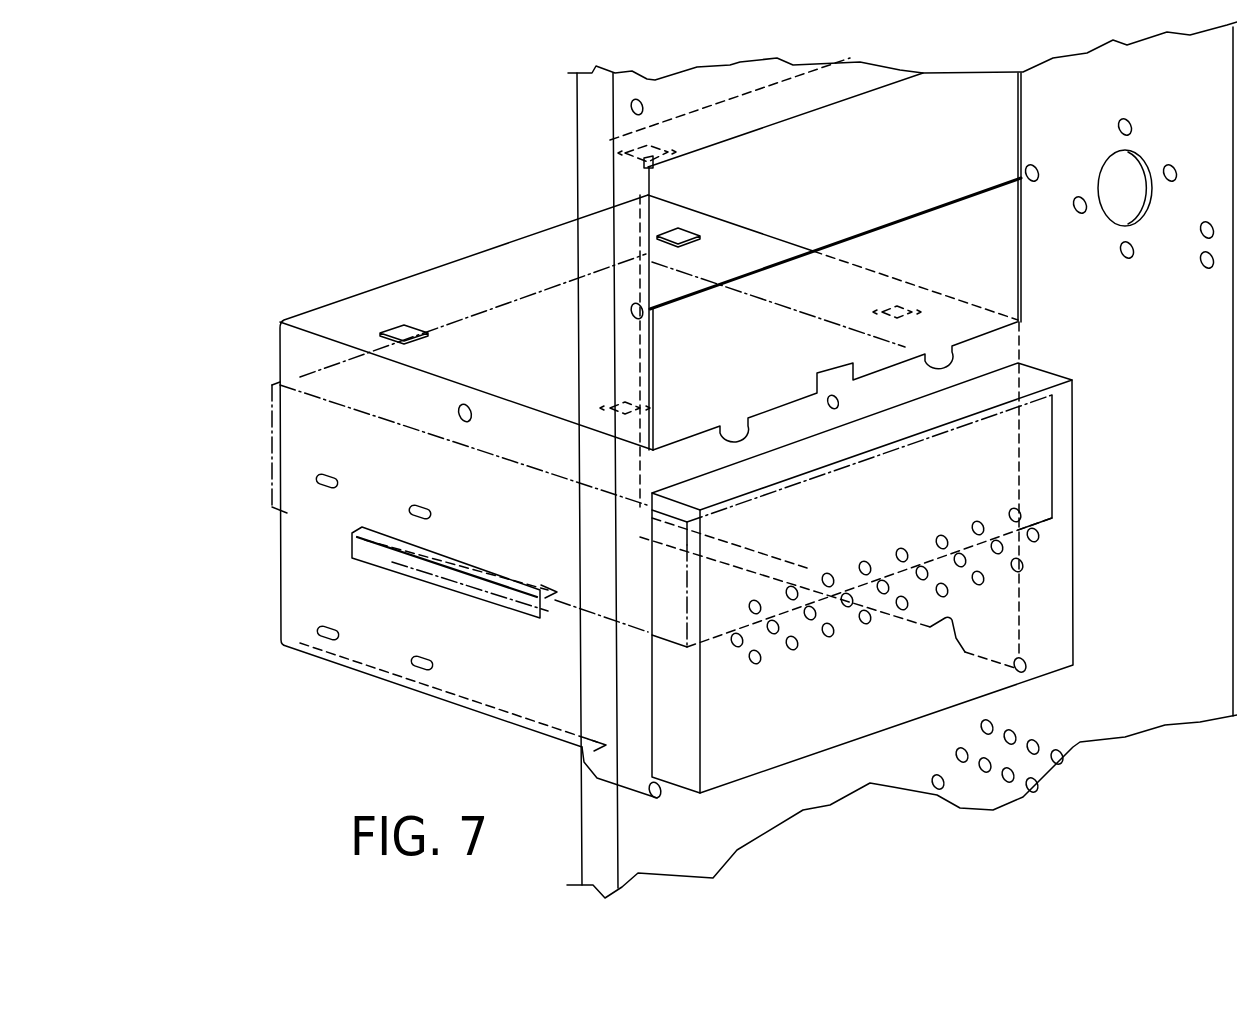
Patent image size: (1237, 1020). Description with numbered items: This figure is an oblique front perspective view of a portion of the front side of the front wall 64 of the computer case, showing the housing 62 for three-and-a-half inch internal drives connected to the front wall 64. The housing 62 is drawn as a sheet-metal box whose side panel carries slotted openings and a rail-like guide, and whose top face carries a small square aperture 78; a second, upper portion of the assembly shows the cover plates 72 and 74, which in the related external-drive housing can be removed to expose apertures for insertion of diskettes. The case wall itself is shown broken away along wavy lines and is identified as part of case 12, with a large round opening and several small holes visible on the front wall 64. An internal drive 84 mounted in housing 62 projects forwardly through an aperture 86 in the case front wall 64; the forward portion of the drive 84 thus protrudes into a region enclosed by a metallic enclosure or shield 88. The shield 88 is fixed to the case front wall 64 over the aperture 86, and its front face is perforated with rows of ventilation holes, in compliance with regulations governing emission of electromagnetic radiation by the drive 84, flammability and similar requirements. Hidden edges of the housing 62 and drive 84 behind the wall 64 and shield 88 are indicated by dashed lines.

The chassis wall 12 is at (1035, 125).
The housing 62 is at (518, 262).
The front wall 64 is at (1161, 452).
The cover plate 72 is at (863, 174).
The cover plate 74 is at (776, 355).
The square aperture 78 is at (407, 328).
The internal drive 84 is at (273, 408).
The aperture 86 is at (737, 677).
The metallic enclosure or shield 88 is at (1053, 603).